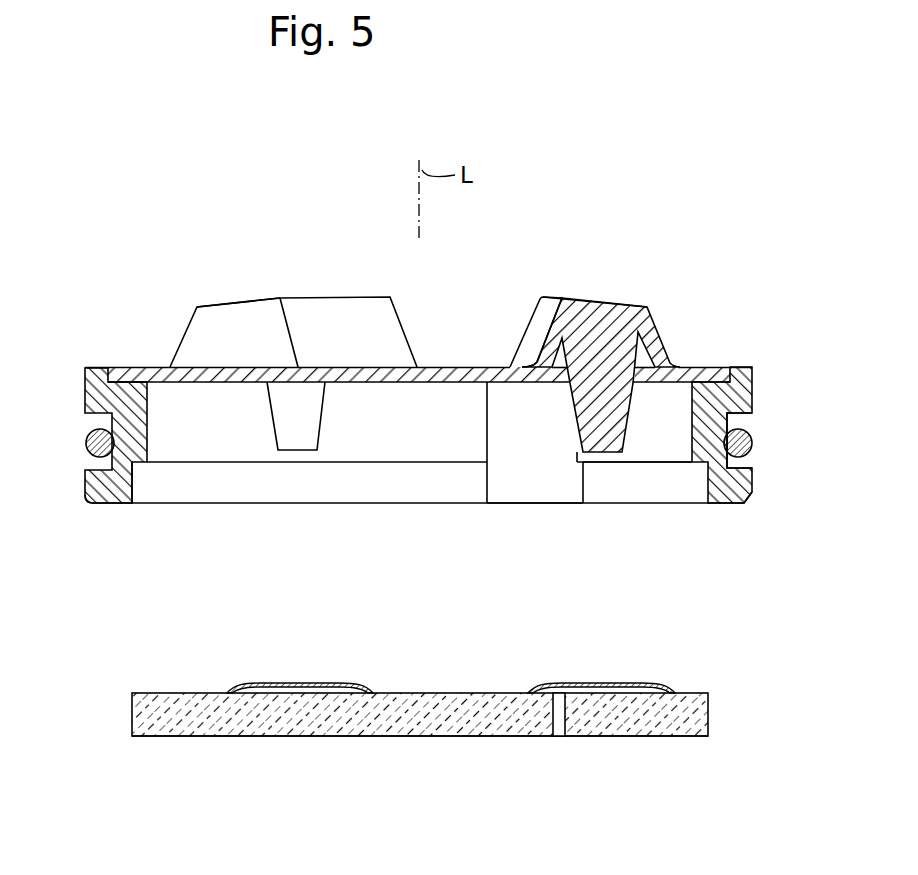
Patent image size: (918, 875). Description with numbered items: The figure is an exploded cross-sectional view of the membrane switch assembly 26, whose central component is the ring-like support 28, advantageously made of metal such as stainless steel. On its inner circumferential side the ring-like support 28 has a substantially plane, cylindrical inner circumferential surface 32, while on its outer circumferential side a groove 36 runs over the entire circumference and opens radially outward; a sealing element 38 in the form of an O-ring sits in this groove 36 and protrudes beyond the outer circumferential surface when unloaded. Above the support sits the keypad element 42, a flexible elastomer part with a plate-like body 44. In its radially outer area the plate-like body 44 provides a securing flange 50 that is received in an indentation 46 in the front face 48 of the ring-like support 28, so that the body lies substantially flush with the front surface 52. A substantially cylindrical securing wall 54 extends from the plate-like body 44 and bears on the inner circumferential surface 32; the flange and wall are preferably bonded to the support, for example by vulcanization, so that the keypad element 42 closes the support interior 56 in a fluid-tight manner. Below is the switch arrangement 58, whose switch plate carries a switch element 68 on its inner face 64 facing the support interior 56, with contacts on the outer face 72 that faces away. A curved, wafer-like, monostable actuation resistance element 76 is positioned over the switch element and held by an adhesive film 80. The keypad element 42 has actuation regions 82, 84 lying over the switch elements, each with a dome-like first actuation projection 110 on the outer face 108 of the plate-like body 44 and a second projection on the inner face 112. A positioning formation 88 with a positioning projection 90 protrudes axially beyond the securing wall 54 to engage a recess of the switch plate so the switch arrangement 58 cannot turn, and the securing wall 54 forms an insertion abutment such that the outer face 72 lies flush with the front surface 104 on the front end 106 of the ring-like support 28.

The membrane switch assembly 26 is at (571, 190).
The ring-like support 28 is at (660, 504).
The inner circumferential surface 32 is at (133, 488).
The groove 36 is at (737, 418).
The sealing element 38 is at (88, 447).
The keypad element 42 is at (434, 364).
The plate-like body 44 is at (458, 378).
The indentation 46 is at (88, 367).
The front face 48 is at (116, 345).
The securing flange 50 is at (116, 391).
The front surface 52 is at (735, 366).
The securing wall 54 is at (312, 463).
The support interior 56 is at (618, 492).
The switch arrangement 58 is at (170, 788).
The inner face 64 is at (703, 691).
The switch element 68 is at (620, 696).
The outer face 72 is at (298, 740).
The actuation resistance element 76 is at (624, 683).
The adhesive film 80 is at (407, 692).
The actuation region 82 is at (314, 310).
The actuation region 84 is at (642, 303).
The positioning formation 88 is at (545, 512).
The positioning projection 90 is at (515, 482).
The front surface 104 is at (732, 503).
The front end 106 is at (117, 517).
The outer face 108 is at (508, 336).
The first actuation projection 110 is at (220, 300).
The inner face 112 is at (752, 448).